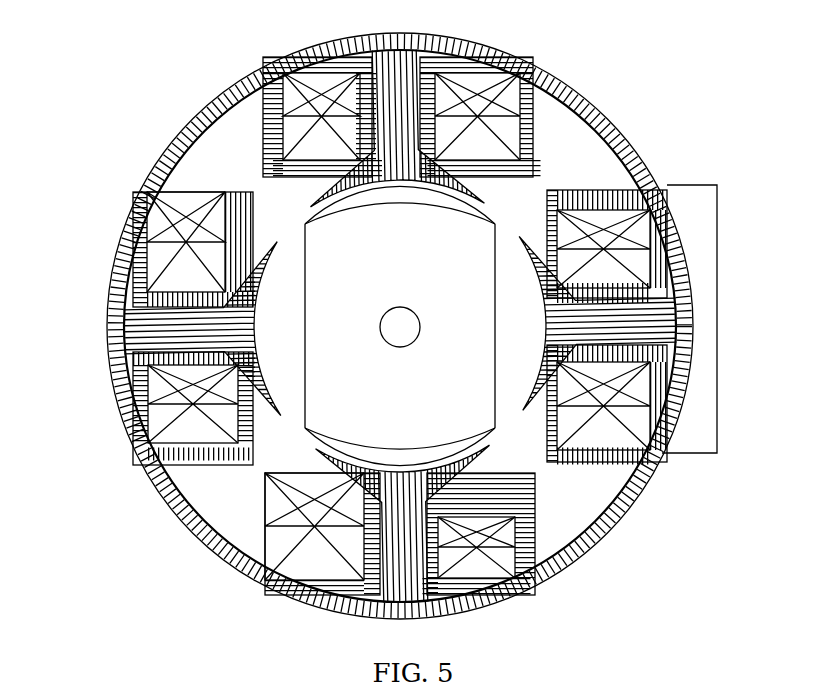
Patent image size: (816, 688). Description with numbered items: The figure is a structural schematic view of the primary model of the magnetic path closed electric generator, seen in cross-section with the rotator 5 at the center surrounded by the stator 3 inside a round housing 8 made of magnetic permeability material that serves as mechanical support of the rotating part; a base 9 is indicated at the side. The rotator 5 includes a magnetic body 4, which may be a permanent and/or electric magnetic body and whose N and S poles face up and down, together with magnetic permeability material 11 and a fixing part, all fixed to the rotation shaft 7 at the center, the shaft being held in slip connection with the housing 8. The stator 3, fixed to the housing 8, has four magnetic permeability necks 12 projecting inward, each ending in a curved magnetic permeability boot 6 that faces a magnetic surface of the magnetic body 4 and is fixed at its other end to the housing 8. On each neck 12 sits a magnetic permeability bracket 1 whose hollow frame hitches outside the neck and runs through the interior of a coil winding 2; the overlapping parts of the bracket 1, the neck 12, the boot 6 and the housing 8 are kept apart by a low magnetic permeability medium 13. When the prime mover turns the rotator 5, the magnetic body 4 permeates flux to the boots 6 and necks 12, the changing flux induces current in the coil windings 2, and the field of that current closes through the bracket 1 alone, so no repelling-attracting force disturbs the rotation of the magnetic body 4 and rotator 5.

The magnetic permeability bracket 1 is at (192, 448).
The coil winding 2 is at (268, 568).
The stator 3 is at (340, 540).
The magnetic body 4 is at (460, 435).
The rotator 5 is at (498, 238).
The magnetic permeability boot 6 is at (565, 310).
The rotation shaft 7 is at (397, 325).
The housing 8 is at (620, 138).
The base 9 is at (702, 332).
The magnetic permeability material 11 is at (193, 517).
The magnetic permeability neck 12 is at (192, 332).
The low magnetic permeability medium 13 is at (145, 200).